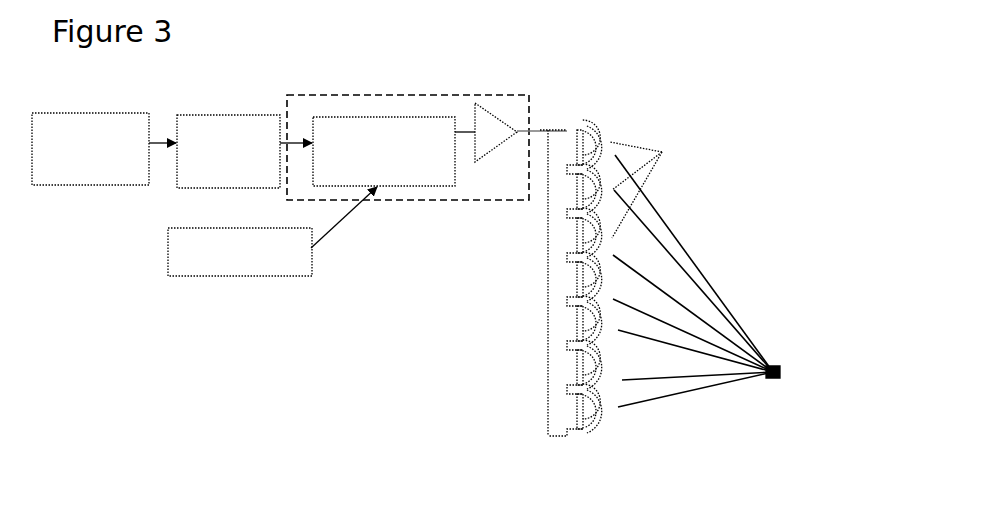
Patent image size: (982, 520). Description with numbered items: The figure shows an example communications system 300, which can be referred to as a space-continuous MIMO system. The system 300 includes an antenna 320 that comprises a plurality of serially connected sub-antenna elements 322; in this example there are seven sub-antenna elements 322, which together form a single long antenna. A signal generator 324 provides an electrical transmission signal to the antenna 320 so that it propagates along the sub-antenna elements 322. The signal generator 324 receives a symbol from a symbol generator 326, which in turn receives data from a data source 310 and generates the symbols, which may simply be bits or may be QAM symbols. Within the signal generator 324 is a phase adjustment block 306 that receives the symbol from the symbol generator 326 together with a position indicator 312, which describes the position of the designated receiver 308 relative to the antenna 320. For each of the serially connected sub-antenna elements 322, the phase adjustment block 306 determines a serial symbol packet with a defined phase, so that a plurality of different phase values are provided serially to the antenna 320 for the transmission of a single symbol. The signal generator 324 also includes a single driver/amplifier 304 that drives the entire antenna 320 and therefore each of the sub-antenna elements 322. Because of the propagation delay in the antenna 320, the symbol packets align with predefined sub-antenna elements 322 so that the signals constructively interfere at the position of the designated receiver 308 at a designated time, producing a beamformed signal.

The communications system 300 is at (340, 325).
The driver/amplifier 304 is at (488, 112).
The phase adjustment block 306 is at (358, 117).
The designated receiver 308 is at (774, 388).
The data source 310 is at (58, 184).
The position indicator 312 is at (248, 275).
The antenna 320 is at (601, 111).
The sub-antenna elements 322 is at (562, 323).
The signal generator 324 is at (327, 92).
The symbol generator 326 is at (189, 115).